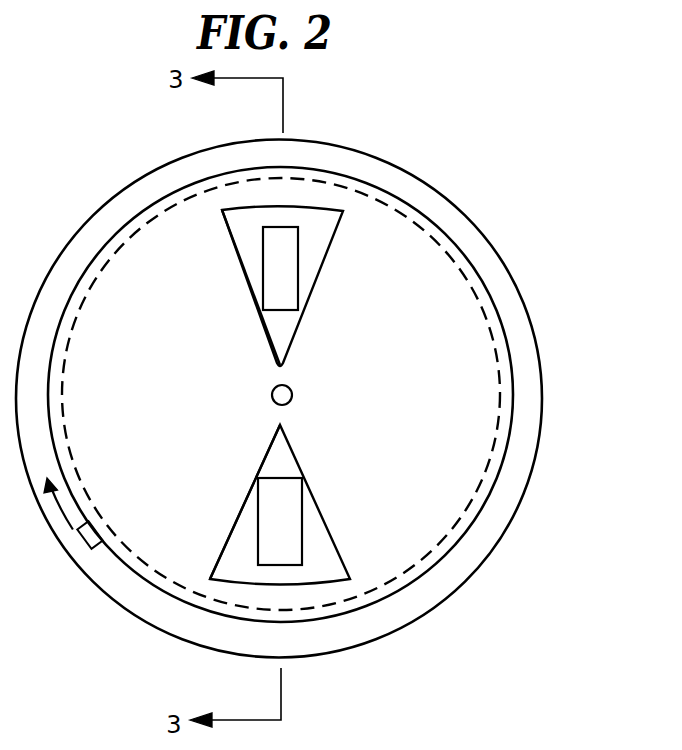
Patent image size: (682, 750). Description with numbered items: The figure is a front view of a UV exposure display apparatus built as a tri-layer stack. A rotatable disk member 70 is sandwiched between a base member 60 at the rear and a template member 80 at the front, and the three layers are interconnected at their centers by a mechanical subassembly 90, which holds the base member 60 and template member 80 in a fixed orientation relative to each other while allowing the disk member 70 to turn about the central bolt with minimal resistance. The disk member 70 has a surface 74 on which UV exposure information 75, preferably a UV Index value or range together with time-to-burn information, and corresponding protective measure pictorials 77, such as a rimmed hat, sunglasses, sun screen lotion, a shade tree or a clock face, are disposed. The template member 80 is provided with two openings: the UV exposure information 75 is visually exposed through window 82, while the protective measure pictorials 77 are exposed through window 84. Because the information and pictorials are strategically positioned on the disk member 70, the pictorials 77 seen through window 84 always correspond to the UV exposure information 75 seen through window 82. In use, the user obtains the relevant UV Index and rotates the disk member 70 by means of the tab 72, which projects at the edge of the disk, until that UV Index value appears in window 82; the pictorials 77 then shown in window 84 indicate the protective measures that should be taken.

The base member 60 is at (410, 173).
The template member 80 is at (452, 238).
The rotatable disk member 70 is at (483, 317).
The tab 72 is at (88, 540).
The surface 74 is at (250, 243).
The UV exposure information 75 is at (280, 268).
The protective measure pictorials 77 is at (280, 521).
The window 82 is at (302, 321).
The window 84 is at (333, 542).
The mechanical subassembly 90 is at (272, 390).